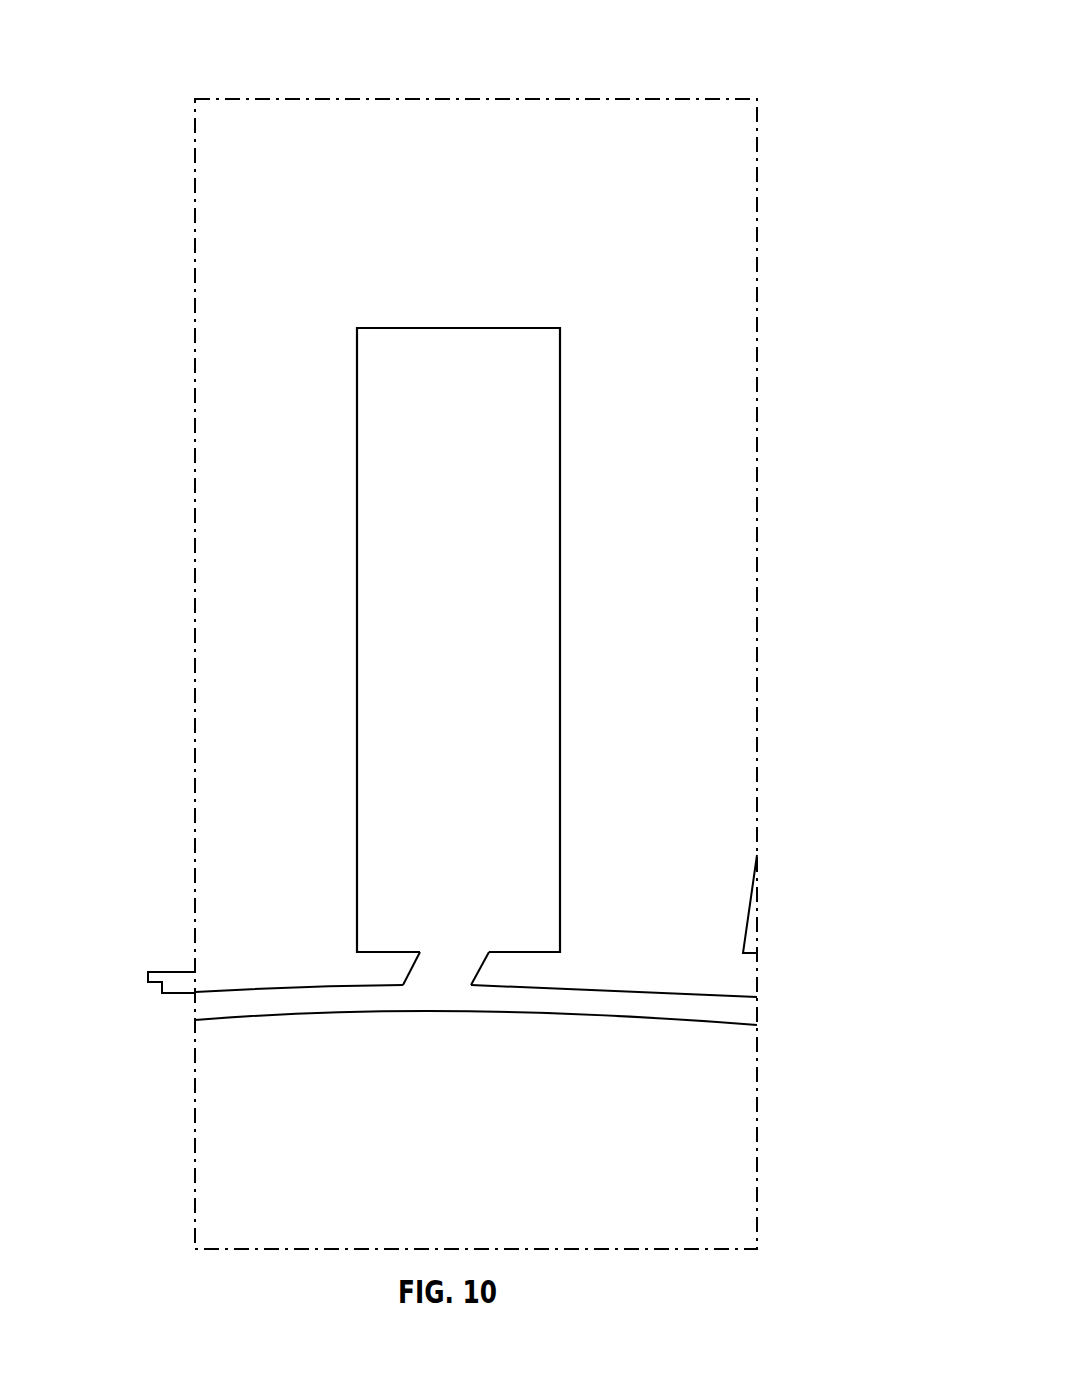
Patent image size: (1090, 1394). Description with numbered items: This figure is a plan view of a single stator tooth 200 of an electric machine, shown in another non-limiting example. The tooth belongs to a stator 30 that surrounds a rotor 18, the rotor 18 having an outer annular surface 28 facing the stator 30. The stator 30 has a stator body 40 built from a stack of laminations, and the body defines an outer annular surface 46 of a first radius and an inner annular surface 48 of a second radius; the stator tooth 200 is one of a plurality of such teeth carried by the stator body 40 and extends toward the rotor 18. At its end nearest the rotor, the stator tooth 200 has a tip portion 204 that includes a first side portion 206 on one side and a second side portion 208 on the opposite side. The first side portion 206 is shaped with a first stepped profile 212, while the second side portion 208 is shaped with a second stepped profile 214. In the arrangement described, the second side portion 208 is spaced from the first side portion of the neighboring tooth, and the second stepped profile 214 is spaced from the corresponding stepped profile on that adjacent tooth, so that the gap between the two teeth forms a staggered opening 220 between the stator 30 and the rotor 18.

The rotor 18 is at (228, 1047).
The outer annular surface 28 is at (732, 1022).
The stator 30 is at (772, 227).
The stator body 40 is at (485, 178).
The outer annular surface 46 is at (268, 99).
The inner annular surface 48 is at (318, 987).
The stator tooth 200 is at (409, 597).
The tip portion 204 is at (257, 973).
The first side portion 206 is at (173, 980).
The second side portion 208 is at (386, 952).
The first stepped profile 212 is at (148, 982).
The second stepped profile 214 is at (388, 967).
The staggered opening 220 is at (445, 947).